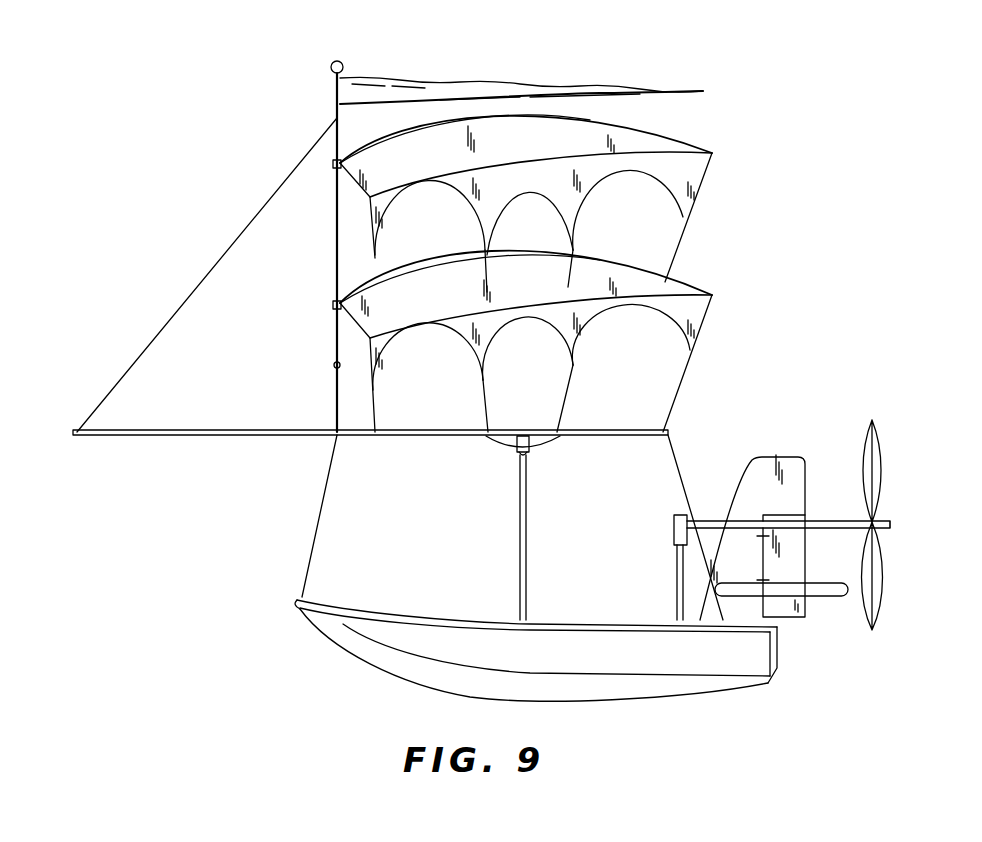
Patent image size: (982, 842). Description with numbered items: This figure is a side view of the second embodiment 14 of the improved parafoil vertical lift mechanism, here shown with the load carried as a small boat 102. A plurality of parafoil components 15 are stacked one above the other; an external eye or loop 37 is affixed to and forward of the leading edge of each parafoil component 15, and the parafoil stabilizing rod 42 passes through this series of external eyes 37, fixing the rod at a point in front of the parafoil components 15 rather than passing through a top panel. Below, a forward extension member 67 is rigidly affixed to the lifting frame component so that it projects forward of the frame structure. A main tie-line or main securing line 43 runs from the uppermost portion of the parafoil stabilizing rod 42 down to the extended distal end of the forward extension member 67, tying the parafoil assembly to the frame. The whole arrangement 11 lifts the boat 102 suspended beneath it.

The sailing rig 11 is at (188, 453).
The second embodiment 14 is at (258, 168).
The parafoil component 15 is at (704, 289).
The external eye or loop 37 is at (338, 165).
The parafoil stabilizing rod 42 is at (338, 236).
The main tie-line or main securing line 43 is at (205, 276).
The forward extension member 67 is at (222, 430).
The small boat 102 is at (318, 630).